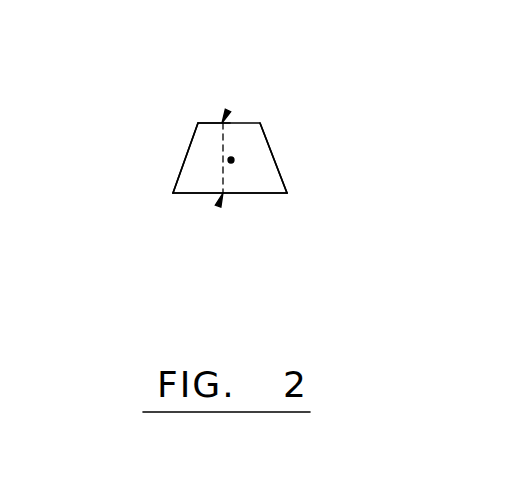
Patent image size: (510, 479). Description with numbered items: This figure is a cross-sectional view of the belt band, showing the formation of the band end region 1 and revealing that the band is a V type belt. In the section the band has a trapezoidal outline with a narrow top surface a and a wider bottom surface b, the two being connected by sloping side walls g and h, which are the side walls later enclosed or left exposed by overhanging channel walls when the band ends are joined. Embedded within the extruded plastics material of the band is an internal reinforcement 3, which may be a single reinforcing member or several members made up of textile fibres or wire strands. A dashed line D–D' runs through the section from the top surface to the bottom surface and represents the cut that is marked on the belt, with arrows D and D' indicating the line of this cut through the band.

The first band end region 1 is at (215, 122).
The internal reinforcement 3 is at (233, 158).
The narrow top surface a is at (203, 122).
The side wall g is at (185, 152).
The side wall h is at (275, 160).
The wider bottom surface b is at (258, 197).
The line D–D' end point D is at (249, 69).
The line D–D' end point D' is at (204, 246).